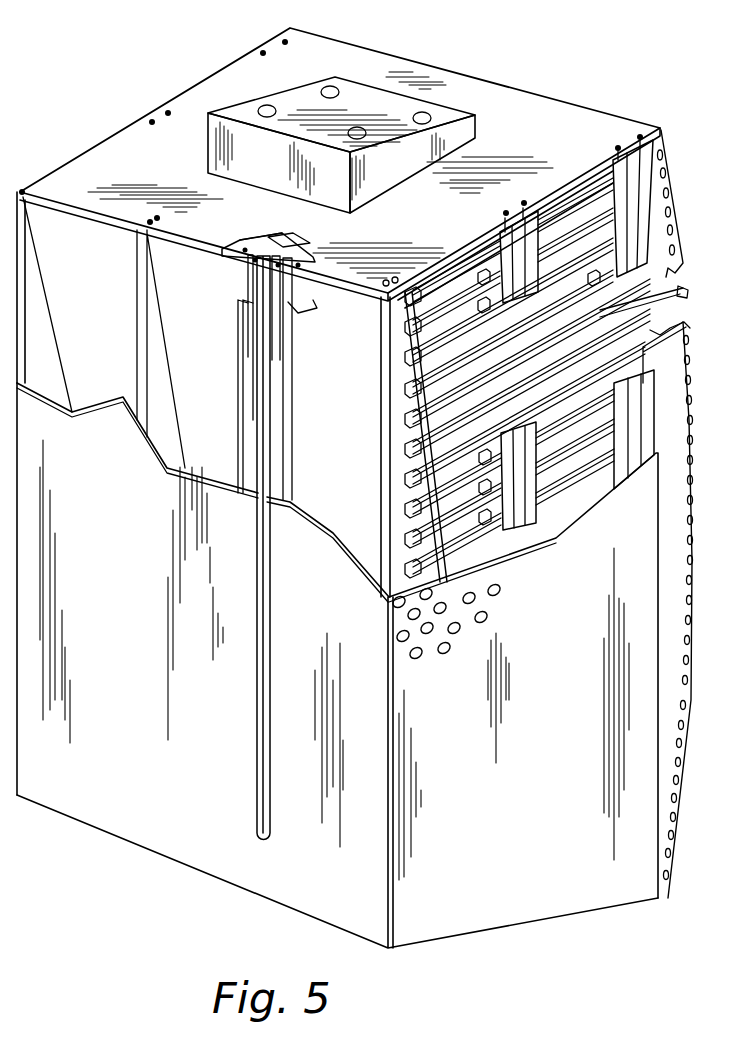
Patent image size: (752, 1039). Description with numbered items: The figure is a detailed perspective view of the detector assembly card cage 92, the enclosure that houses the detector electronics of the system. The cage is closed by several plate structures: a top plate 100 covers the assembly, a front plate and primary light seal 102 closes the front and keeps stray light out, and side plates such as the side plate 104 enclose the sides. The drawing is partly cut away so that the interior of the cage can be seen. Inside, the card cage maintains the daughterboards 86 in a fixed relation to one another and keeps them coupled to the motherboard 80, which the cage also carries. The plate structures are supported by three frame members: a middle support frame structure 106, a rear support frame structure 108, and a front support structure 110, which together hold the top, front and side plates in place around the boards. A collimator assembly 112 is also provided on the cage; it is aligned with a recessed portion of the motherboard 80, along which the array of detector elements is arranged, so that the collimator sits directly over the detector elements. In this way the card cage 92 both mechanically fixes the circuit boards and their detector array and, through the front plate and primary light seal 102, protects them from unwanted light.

The motherboard 80 is at (433, 547).
The daughterboards 86 is at (643, 302).
The detector assembly card cage 92 is at (598, 93).
The top plate 100 is at (117, 158).
The front plate and primary light seal 102 is at (295, 823).
The side plate 104 is at (519, 898).
The middle support frame structure 106 is at (547, 208).
The rear support frame structure 108 is at (646, 190).
The front support structure 110 is at (377, 550).
The collimator assembly 112 is at (290, 287).